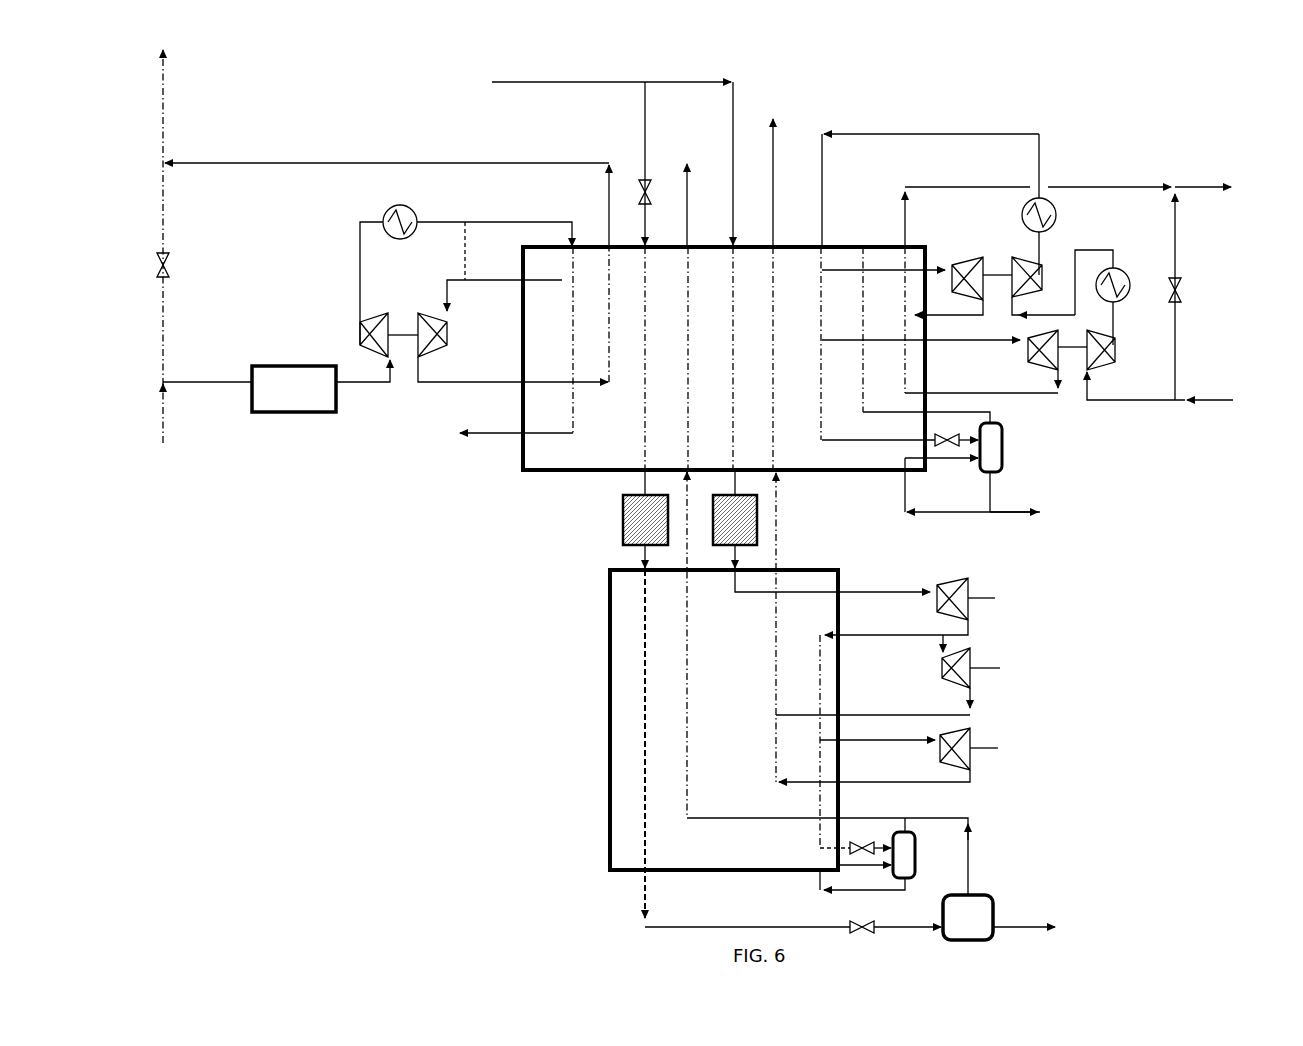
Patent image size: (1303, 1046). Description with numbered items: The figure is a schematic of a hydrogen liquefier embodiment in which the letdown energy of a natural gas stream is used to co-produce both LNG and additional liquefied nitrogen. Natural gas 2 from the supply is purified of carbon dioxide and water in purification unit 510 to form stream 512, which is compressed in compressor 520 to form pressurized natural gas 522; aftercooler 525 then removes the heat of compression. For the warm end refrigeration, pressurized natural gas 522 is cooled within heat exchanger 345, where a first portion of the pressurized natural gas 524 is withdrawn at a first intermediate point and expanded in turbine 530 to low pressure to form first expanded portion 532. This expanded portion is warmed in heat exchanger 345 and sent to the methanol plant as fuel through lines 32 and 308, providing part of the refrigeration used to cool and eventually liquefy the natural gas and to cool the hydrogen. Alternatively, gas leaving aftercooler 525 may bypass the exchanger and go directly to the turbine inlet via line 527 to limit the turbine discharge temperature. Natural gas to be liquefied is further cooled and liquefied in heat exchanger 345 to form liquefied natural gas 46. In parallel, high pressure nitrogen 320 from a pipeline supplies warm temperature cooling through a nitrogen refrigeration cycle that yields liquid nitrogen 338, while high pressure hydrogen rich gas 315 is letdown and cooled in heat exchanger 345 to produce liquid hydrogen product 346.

The fuel gas line 308 is at (165, 86).
The natural gas 2 is at (227, 382).
The purification unit 510 is at (300, 366).
The purified natural gas stream 512 is at (357, 383).
The compressor 520 is at (370, 318).
The pressurized natural gas 522 is at (360, 258).
The aftercooler 525 is at (410, 205).
The bypass line 527 is at (464, 260).
The first portion of pressurized natural gas 524 is at (482, 268).
The turbine 530 is at (450, 340).
The first expanded portion 532 is at (455, 382).
The fuel gas line 32 is at (305, 160).
The liquefied natural gas 46 is at (480, 433).
The high pressure hydrogen rich gas 315 is at (590, 82).
The heat exchanger 345 is at (525, 475).
The high pressure nitrogen 320 is at (1205, 400).
The liquid nitrogen 338 is at (1022, 512).
The liquid hydrogen product 346 is at (838, 705).